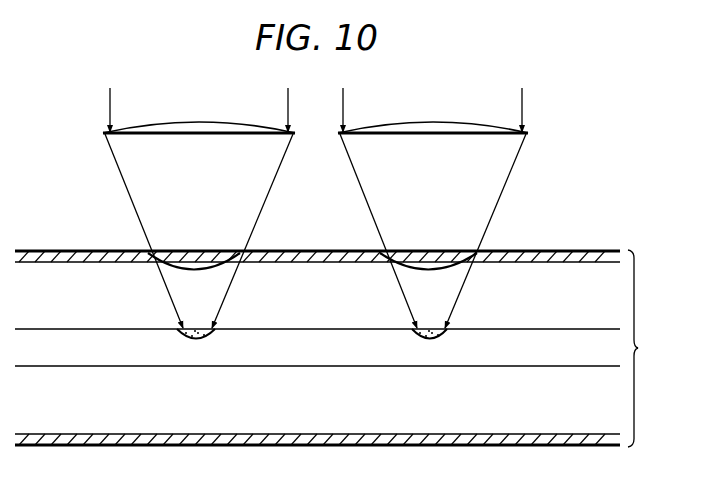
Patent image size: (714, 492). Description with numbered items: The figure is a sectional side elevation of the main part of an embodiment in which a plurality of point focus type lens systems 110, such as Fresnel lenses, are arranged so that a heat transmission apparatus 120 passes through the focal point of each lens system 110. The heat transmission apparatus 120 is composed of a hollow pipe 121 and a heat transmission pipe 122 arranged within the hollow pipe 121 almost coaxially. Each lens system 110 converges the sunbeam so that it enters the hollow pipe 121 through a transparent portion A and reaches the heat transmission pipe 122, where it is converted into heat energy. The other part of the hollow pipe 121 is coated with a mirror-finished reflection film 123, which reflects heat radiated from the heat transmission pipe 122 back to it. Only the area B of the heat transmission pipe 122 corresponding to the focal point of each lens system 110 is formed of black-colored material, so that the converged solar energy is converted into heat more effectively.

The lens system 110 is at (192, 125).
The heat transmission apparatus 120 is at (344, 340).
The hollow pipe 121 is at (63, 264).
The heat transmission pipe 122 is at (122, 341).
The mirror-finished reflection film 123 is at (53, 249).
The transparent portion A is at (193, 254).
The black-colored area B is at (197, 327).